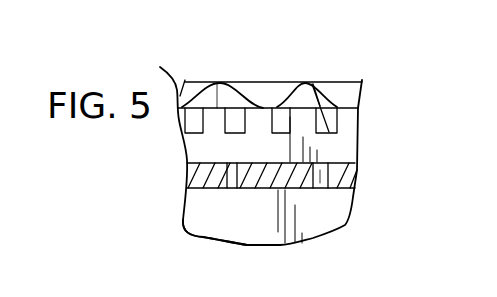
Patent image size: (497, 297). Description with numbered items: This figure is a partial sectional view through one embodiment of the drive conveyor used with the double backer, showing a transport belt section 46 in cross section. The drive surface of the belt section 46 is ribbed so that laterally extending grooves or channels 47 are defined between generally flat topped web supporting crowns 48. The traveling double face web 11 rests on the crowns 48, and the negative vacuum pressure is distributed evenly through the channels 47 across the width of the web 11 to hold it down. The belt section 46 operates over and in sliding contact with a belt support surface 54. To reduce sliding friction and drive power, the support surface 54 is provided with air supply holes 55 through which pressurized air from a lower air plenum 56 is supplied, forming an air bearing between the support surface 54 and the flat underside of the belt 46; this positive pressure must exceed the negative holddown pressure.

The double face web 11 is at (176, 80).
The transport belt section 46 is at (340, 147).
The groove 47 is at (277, 106).
The crown 48 is at (216, 83).
The belt support surface 54 is at (203, 163).
The air supply hole 55 is at (232, 165).
The lower air plenum 56 is at (194, 214).